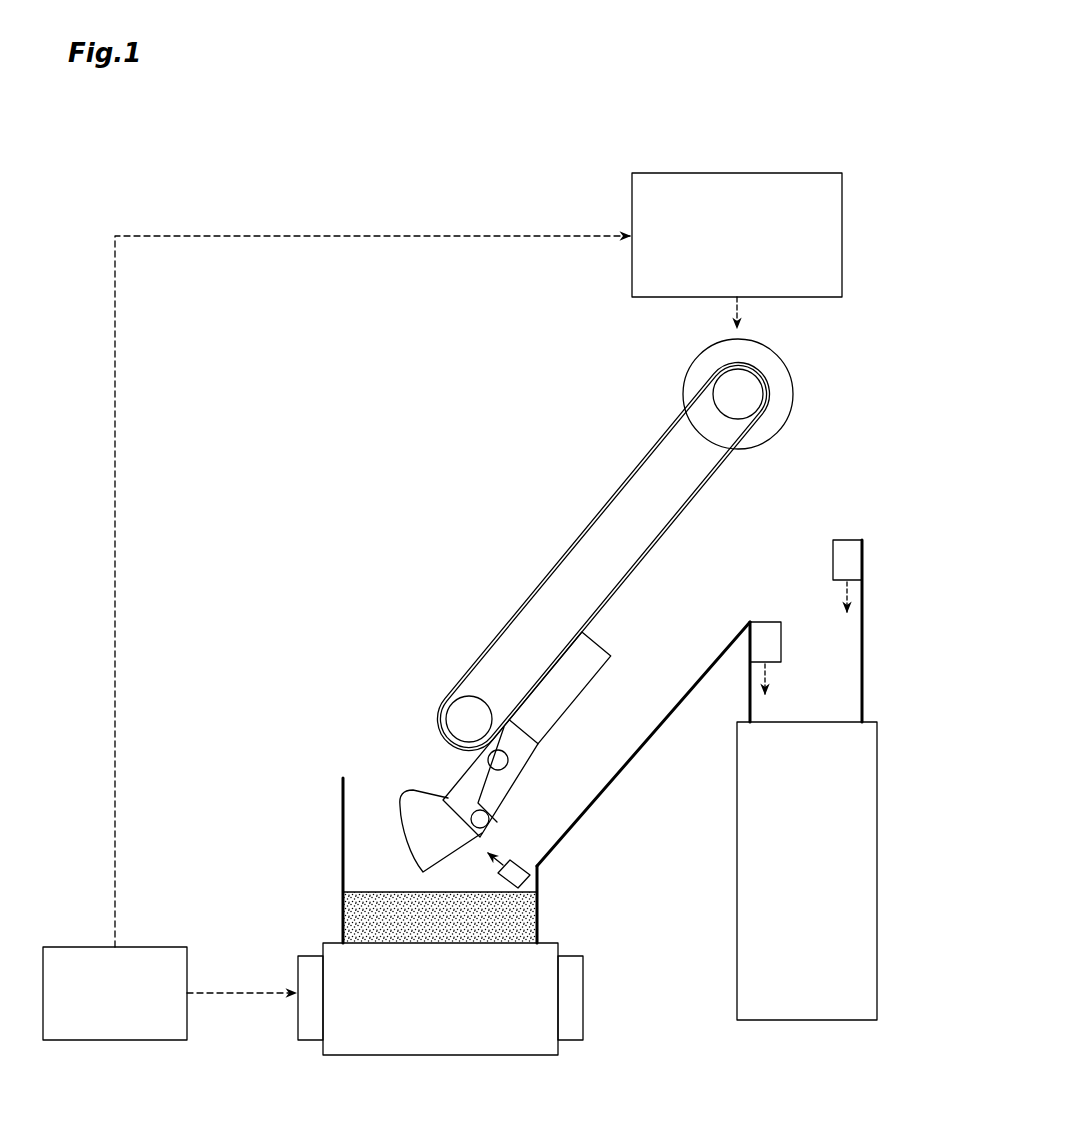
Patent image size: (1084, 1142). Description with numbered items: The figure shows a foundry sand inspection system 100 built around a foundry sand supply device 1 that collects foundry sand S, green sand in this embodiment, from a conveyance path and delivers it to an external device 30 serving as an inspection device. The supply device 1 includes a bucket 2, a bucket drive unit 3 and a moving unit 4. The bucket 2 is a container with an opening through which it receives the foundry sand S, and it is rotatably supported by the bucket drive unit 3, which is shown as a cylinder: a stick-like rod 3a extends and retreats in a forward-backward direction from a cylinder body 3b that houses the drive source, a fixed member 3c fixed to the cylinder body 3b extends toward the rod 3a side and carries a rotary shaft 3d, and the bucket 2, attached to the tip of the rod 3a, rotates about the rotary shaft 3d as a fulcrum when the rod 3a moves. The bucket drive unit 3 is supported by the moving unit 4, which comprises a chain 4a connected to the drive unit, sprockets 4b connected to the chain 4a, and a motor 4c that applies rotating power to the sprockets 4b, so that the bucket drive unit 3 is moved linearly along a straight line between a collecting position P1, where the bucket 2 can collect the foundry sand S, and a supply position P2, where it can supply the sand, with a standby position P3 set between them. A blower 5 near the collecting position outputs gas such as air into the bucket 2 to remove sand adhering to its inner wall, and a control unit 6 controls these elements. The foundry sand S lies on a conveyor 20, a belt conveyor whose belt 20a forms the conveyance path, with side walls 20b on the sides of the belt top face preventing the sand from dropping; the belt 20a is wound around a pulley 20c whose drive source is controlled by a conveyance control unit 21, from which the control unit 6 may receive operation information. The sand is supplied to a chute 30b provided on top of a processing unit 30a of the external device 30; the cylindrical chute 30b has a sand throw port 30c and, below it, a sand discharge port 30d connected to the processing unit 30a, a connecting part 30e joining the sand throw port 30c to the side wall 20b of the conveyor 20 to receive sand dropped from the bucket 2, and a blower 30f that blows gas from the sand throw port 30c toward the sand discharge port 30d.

The foundry sand inspection system 100 is at (866, 392).
The foundry sand supply device 1 is at (520, 487).
The bucket 2 is at (417, 790).
The bucket drive unit 3 is at (560, 729).
The rod 3a is at (510, 755).
The cylinder body 3b is at (562, 694).
The fixed member 3c is at (498, 791).
The rotary shaft 3d is at (490, 823).
The moving unit 4 is at (623, 532).
The chain 4a is at (590, 532).
The sprockets 4b is at (746, 392).
The motor 4c is at (780, 352).
The blower 5 is at (538, 880).
The control unit 6 is at (797, 173).
The conveyor 20 is at (432, 916).
The belt 20a is at (558, 950).
The side walls 20b is at (343, 828).
The pulley 20c is at (583, 1000).
The conveyance control unit 21 is at (154, 947).
The foundry sand S is at (360, 918).
The external device 30 is at (750, 749).
The processing unit 30a is at (878, 840).
The chute 30b is at (865, 630).
The sand throw port 30c is at (808, 547).
The sand discharge port 30d is at (832, 720).
The connecting part 30e is at (656, 740).
The blower 30f is at (848, 558).
The collecting position P1 is at (525, 674).
The supply position P2 is at (772, 426).
The standby position P3 is at (568, 624).